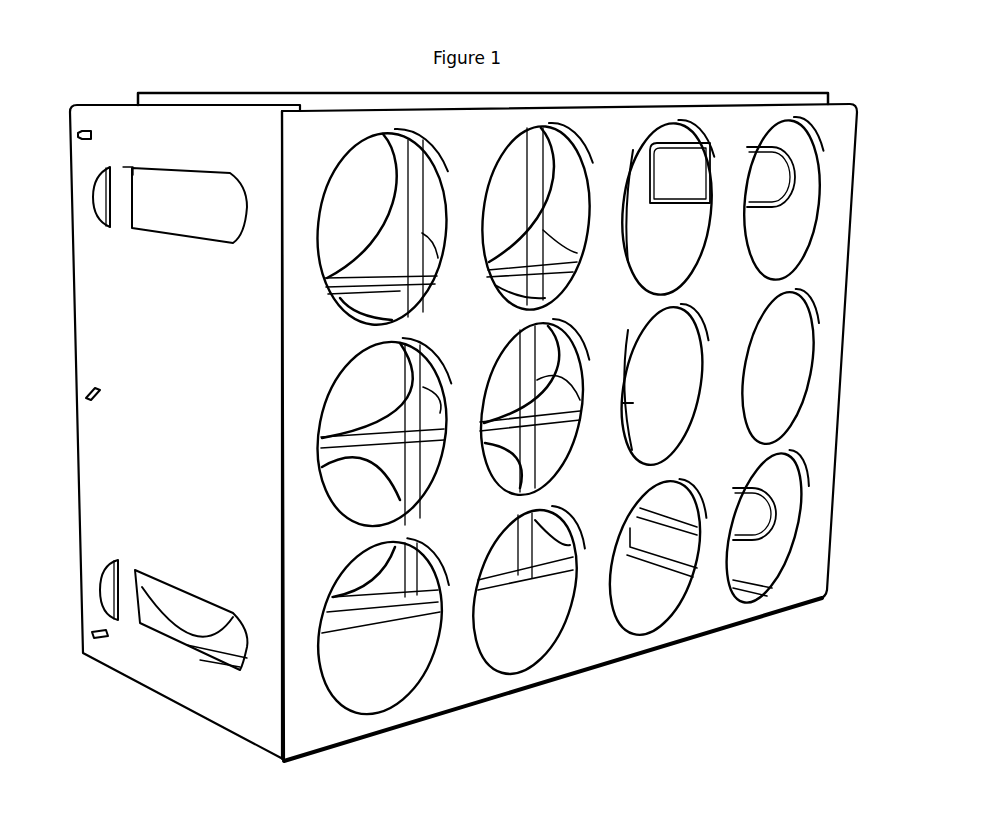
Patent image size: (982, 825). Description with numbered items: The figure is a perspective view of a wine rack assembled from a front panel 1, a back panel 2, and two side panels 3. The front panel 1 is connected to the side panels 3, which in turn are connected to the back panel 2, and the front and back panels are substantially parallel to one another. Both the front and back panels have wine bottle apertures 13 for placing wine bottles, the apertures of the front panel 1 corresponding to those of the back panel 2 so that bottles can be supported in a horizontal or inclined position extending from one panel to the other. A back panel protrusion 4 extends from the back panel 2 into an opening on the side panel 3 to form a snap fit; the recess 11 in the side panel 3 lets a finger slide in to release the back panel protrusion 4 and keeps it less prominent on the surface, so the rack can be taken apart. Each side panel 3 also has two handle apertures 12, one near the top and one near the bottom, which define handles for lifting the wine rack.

The front panel 1 is at (588, 648).
The back panel 2 is at (250, 103).
The side panel 3 is at (90, 343).
The back panel protrusion 4 is at (103, 168).
The recess 11 is at (100, 195).
The handle aperture 12 is at (183, 172).
The wine bottle aperture 13 is at (660, 160).